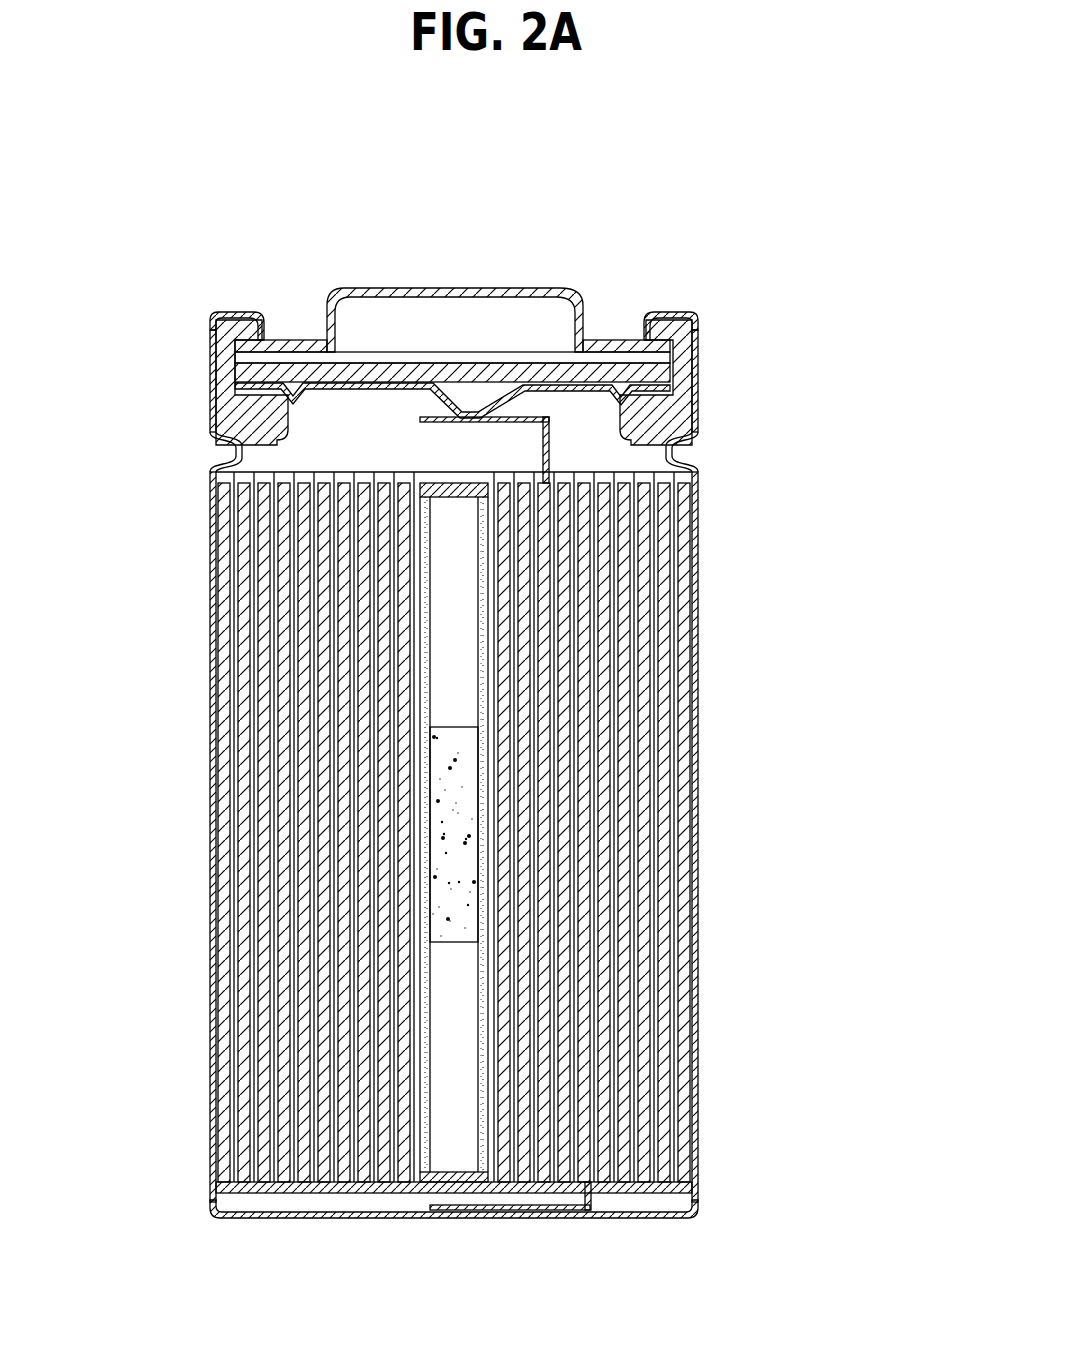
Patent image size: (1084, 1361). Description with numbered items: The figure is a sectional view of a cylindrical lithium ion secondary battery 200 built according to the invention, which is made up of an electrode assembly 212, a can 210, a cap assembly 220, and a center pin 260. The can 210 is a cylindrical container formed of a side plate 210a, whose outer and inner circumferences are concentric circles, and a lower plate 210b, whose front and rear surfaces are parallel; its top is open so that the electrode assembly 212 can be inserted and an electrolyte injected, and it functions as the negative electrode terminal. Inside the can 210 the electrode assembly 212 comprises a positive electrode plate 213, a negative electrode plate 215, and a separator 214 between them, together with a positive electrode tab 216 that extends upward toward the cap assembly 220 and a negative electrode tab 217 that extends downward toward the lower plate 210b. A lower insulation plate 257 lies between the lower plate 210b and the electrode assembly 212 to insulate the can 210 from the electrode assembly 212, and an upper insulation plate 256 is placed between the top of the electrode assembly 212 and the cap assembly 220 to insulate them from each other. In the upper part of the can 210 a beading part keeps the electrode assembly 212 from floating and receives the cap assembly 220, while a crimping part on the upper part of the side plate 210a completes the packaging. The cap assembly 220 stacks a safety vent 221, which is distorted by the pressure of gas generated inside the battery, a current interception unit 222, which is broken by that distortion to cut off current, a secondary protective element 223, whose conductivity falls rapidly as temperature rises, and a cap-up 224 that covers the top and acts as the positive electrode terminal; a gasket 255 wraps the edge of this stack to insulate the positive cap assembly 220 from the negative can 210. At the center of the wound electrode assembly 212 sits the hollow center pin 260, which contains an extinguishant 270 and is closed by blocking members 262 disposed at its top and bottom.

The lithium ion secondary battery 200 is at (892, 188).
The can 210 is at (210, 375).
The side plate 210a is at (210, 848).
The lower plate 210b is at (357, 1217).
The electrode assembly 212 is at (860, 448).
The positive electrode plate 213 is at (690, 540).
The separator 214 is at (676, 607).
The negative electrode plate 215 is at (665, 652).
The positive electrode tab 216 is at (550, 428).
The negative electrode tab 217 is at (590, 1212).
The cap assembly 220 is at (560, 170).
The safety vent 221 is at (410, 385).
The current interception unit 222 is at (500, 372).
The secondary protective element 223 is at (556, 354).
The cap-up 224 is at (350, 288).
The gasket 255 is at (683, 315).
The upper insulation plate 256 is at (210, 472).
The lower insulation plate 257 is at (252, 1194).
The center pin 260 is at (487, 983).
The blocking members 262 is at (457, 1185).
The extinguishant 270 is at (455, 852).